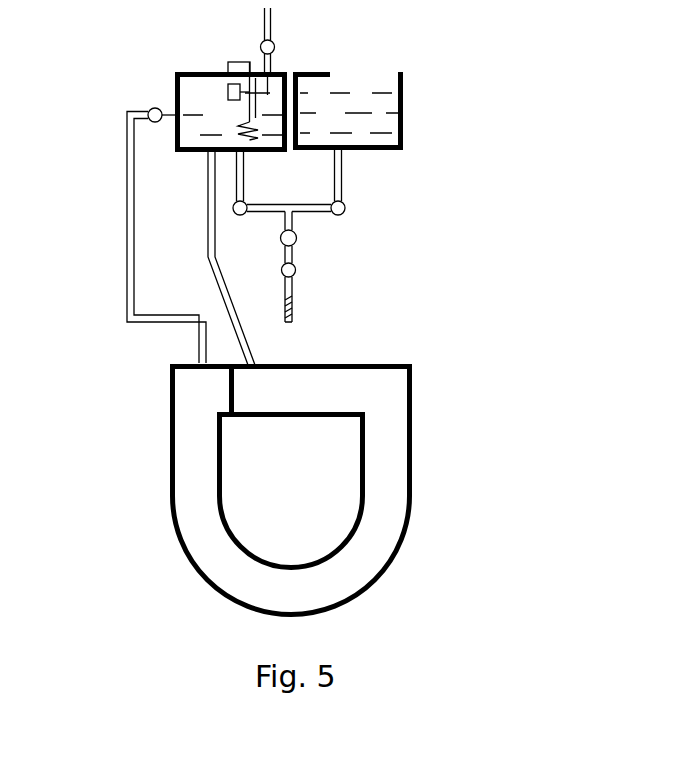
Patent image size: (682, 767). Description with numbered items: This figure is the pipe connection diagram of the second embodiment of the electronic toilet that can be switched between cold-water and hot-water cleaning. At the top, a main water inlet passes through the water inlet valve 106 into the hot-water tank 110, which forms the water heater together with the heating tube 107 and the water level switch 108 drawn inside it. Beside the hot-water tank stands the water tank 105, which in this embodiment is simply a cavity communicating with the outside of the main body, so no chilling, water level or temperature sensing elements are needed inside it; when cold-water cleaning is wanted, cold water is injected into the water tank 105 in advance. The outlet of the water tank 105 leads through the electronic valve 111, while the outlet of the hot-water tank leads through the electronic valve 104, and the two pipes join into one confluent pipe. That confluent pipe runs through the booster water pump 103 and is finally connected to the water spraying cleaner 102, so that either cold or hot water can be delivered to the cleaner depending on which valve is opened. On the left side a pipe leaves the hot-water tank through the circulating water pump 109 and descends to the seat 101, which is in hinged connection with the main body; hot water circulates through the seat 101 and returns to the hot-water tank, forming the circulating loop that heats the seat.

The seat 101 is at (381, 482).
The water spraying cleaner 102 is at (294, 293).
The booster water pump 103 is at (298, 238).
The electronic valve 104 is at (233, 206).
The water tank 105 is at (405, 88).
The water inlet valve 106 is at (259, 46).
The heating tube 107 is at (245, 63).
The water level switch 108 is at (227, 90).
The circulating water pump 109 is at (147, 113).
The first water tank 110 is at (172, 138).
The electronic valve 111 is at (346, 208).